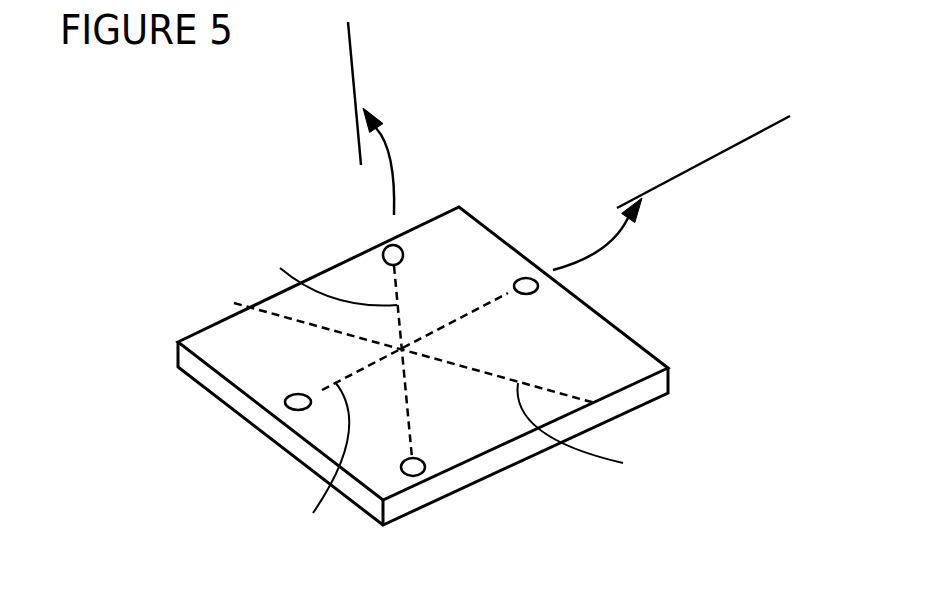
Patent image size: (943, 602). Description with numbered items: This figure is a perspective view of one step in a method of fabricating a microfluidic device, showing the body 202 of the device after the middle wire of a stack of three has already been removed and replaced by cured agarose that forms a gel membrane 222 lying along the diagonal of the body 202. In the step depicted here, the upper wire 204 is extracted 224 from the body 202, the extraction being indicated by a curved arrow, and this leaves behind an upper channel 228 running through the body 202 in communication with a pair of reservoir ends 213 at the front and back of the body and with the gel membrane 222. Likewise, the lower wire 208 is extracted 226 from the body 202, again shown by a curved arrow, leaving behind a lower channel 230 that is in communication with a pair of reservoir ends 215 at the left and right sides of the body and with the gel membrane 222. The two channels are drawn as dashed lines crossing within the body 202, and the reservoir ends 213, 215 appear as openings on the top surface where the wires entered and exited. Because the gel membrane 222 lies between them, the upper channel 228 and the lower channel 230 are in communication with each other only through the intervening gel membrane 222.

The body 202 is at (508, 472).
The upper wire 204 is at (352, 65).
The lower wire 208 is at (708, 160).
The reservoir ends 213 is at (403, 250).
The reservoir ends 215 is at (538, 286).
The gel membrane 222 is at (591, 430).
The extraction of upper wire 224 is at (393, 173).
The extraction of lower wire 226 is at (603, 247).
The upper channel 228 is at (318, 276).
The lower channel 230 is at (310, 461).